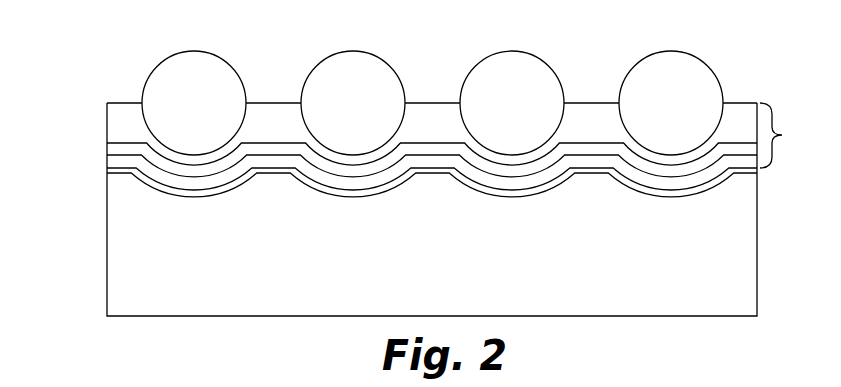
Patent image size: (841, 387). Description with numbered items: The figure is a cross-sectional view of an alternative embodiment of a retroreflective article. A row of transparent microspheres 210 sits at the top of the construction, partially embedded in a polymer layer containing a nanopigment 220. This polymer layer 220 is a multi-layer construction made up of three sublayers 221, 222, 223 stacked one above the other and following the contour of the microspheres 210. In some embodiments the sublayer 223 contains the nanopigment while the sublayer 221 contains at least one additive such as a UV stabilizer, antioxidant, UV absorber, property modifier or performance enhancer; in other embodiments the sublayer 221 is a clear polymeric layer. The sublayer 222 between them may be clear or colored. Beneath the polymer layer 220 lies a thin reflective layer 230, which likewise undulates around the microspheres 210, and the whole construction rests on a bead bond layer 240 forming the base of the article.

The transparent microspheres 210 is at (317, 83).
The polymer layer containing a nanopigment 220 is at (790, 135).
The sublayer 221 is at (118, 113).
The sublayer 222 is at (118, 160).
The sublayer 223 is at (117, 148).
The reflective layer 230 is at (722, 182).
The bead bond layer 240 is at (743, 277).